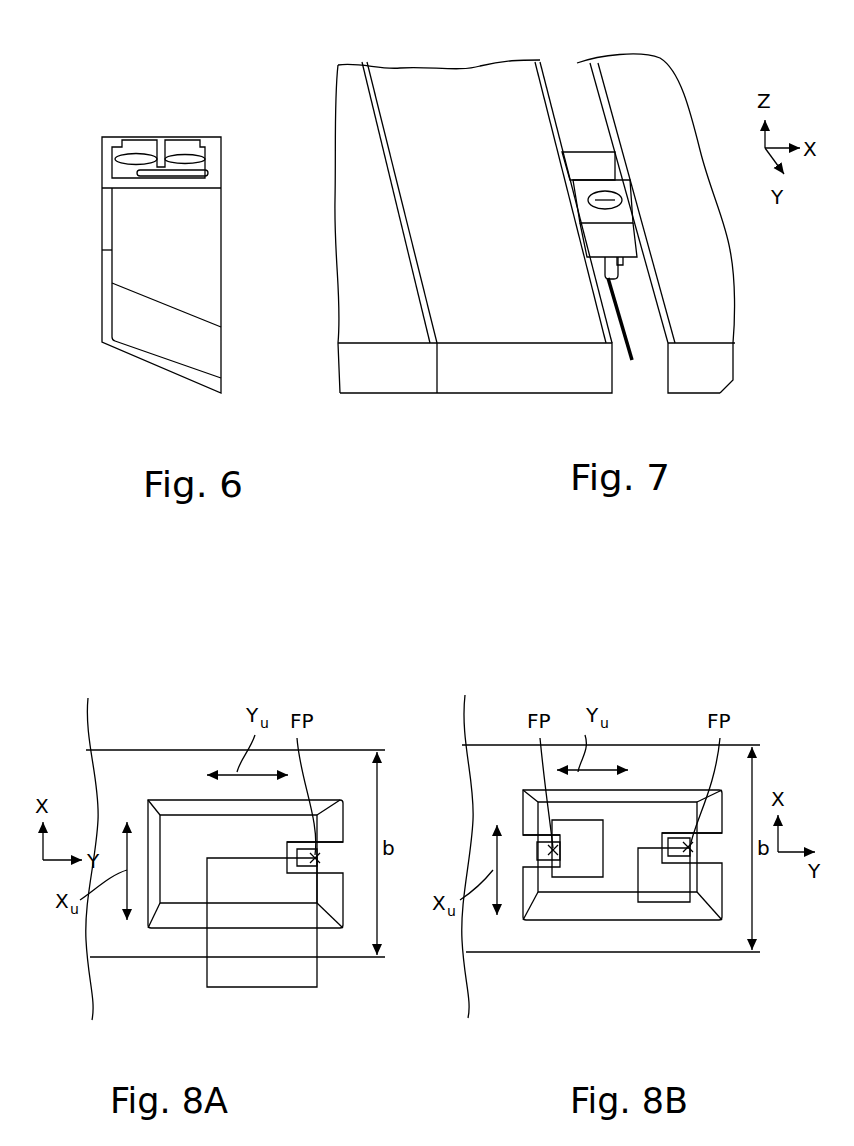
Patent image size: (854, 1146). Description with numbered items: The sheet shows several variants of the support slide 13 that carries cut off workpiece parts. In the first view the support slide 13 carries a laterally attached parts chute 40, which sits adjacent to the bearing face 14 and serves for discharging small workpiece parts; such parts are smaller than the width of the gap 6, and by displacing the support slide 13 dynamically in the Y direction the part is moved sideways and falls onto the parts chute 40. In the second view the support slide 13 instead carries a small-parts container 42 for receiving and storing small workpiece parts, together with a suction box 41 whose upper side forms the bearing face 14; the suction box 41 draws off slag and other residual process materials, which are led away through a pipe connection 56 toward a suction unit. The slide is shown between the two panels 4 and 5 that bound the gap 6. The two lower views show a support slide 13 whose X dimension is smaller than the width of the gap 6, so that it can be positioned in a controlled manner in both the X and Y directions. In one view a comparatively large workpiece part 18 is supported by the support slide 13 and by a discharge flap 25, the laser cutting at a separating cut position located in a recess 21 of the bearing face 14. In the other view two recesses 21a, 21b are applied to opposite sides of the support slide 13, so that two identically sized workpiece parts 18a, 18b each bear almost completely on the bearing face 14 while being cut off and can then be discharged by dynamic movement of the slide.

In FIG. 7, the first panel 4 is at (367, 238).
In FIG. 7, the second panel 5 is at (728, 250).
In FIG. 8A, the second panel 5 is at (100, 732).
In FIG. 8B, the second panel 5 is at (480, 730).
In FIG. 8A, the gap 6 is at (122, 790).
In FIG. 8B, the gap 6 is at (497, 788).
In FIG. 6, the support slide 13 is at (178, 128).
In FIG. 7, the support slide 13 is at (607, 214).
In FIG. 8A, the support slide 13 is at (175, 792).
In FIG. 8B, the support slide 13 is at (672, 778).
In FIG. 6, the bearing face 14 is at (143, 148).
In FIG. 7, the bearing face 14 is at (620, 183).
In FIG. 8A, the bearing face 14 is at (188, 832).
In FIG. 8B, the bearing face 14 is at (630, 822).
In FIG. 8A, the workpiece part 18 is at (245, 895).
In FIG. 8B, the workpiece part 18a is at (590, 845).
In FIG. 8B, the workpiece part 18b is at (660, 885).
In FIG. 8A, the recess 21 is at (337, 850).
In FIG. 8B, the recess 21a is at (706, 850).
In FIG. 8B, the recess 21b is at (535, 852).
In FIG. 7, the discharge flap 25 is at (465, 92).
In FIG. 8A, the discharge flap 25 is at (100, 982).
In FIG. 8B, the discharge flap 25 is at (483, 980).
In FIG. 6, the parts chute 40 is at (170, 345).
In FIG. 7, the suction box 41 is at (622, 240).
In FIG. 7, the small-parts container 42 is at (588, 165).
In FIG. 7, the pipe connection 56 is at (626, 342).